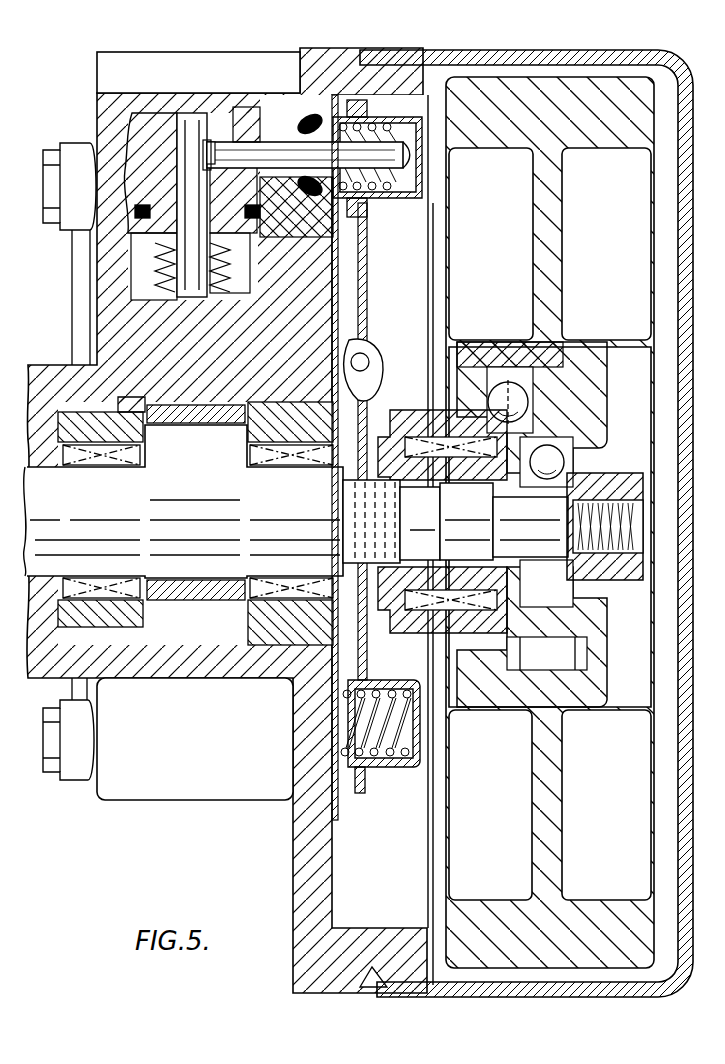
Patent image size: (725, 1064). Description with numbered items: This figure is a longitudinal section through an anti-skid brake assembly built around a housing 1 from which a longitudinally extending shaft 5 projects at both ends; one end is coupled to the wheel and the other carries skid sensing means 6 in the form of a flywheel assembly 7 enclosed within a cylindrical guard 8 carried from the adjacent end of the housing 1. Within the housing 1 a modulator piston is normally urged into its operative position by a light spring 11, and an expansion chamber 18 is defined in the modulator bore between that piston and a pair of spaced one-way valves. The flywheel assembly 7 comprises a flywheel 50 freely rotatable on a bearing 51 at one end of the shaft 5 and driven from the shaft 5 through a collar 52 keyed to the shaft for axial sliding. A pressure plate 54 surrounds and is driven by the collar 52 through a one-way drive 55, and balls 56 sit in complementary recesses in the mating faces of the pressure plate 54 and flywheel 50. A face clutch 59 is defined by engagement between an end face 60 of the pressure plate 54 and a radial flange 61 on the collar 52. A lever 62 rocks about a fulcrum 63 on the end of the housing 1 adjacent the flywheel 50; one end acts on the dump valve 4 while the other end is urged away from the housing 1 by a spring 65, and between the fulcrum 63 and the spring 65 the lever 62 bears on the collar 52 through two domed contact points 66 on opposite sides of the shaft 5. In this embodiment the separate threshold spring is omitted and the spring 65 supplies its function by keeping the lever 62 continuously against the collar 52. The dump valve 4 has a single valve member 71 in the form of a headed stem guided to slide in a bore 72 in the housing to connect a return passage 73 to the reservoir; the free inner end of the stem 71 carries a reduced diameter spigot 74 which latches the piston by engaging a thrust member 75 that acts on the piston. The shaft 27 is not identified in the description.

The housing 1 is at (308, 902).
The pressure dump valve 4 is at (323, 157).
The shaft 5 is at (87, 527).
The skid sensing means 6 is at (583, 354).
The flywheel assembly 7 is at (479, 396).
The cylindrical guard 8 is at (633, 990).
The light spring 11 is at (160, 273).
The expansion chamber 18 is at (150, 257).
The shaft 27 is at (170, 533).
The flywheel 50 is at (603, 107).
The bearing 51 is at (563, 613).
The collar 52 is at (470, 467).
The pressure plate 54 is at (502, 663).
The one-way drive 55 is at (428, 447).
The balls 56 is at (513, 393).
The face clutch 59 is at (403, 633).
The end face 60 is at (432, 632).
The radial flange 61 is at (335, 580).
The lever 62 is at (363, 250).
The fulcrum 63 is at (362, 360).
The spring 65 is at (400, 768).
The domed contact points 66 is at (363, 508).
The valve member 71 is at (280, 150).
The bore 72 is at (248, 127).
The return passage 73 is at (230, 118).
The spigot 74 is at (207, 146).
The thrust member 75 is at (190, 218).